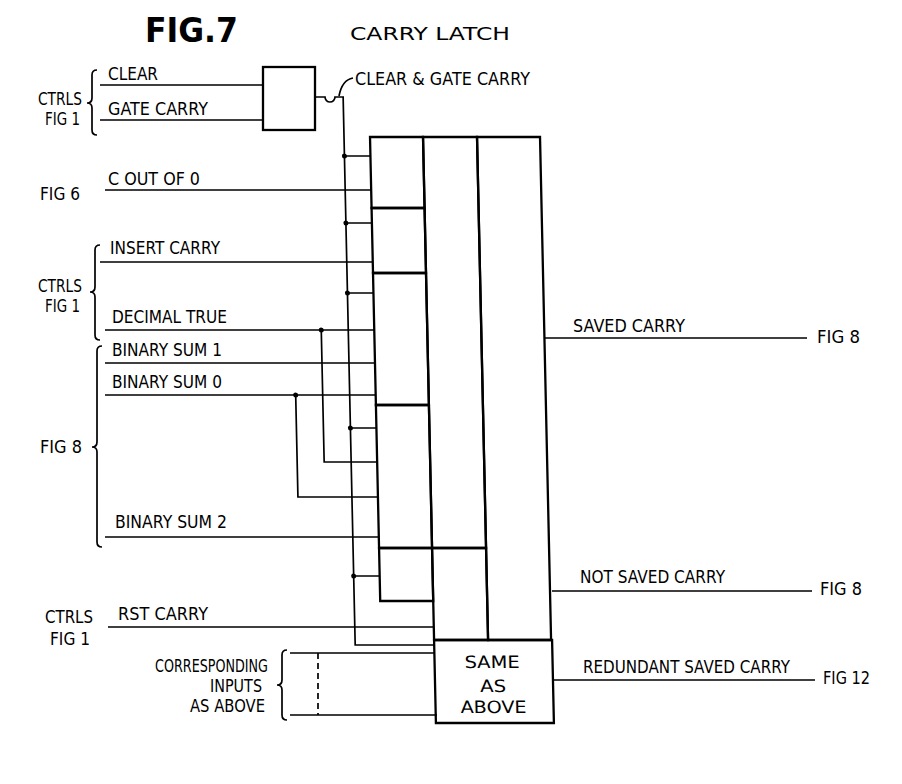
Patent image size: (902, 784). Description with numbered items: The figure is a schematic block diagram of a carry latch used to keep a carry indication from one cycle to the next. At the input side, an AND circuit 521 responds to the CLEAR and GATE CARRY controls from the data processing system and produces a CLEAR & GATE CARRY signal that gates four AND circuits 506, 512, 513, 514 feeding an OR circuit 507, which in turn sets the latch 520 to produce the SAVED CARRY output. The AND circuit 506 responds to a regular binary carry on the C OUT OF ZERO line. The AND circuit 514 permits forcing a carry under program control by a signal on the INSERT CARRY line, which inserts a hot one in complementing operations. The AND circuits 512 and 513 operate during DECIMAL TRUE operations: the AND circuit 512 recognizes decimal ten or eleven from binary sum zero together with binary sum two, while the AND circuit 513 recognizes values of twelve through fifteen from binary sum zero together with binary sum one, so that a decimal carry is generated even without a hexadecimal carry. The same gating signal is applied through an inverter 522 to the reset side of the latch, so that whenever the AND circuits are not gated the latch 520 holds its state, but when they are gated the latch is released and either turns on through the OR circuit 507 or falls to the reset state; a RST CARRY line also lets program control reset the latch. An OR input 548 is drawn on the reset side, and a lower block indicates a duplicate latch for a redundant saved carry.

The AND circuit 506 is at (392, 145).
The OR circuit 507 is at (449, 140).
The AND circuit 512 is at (376, 517).
The AND circuit 513 is at (379, 305).
The AND circuit 514 is at (372, 236).
The carry latch 520 is at (542, 210).
The AND circuit 521 is at (271, 135).
The inverter 522 is at (380, 564).
The OR circuit 548 is at (432, 613).